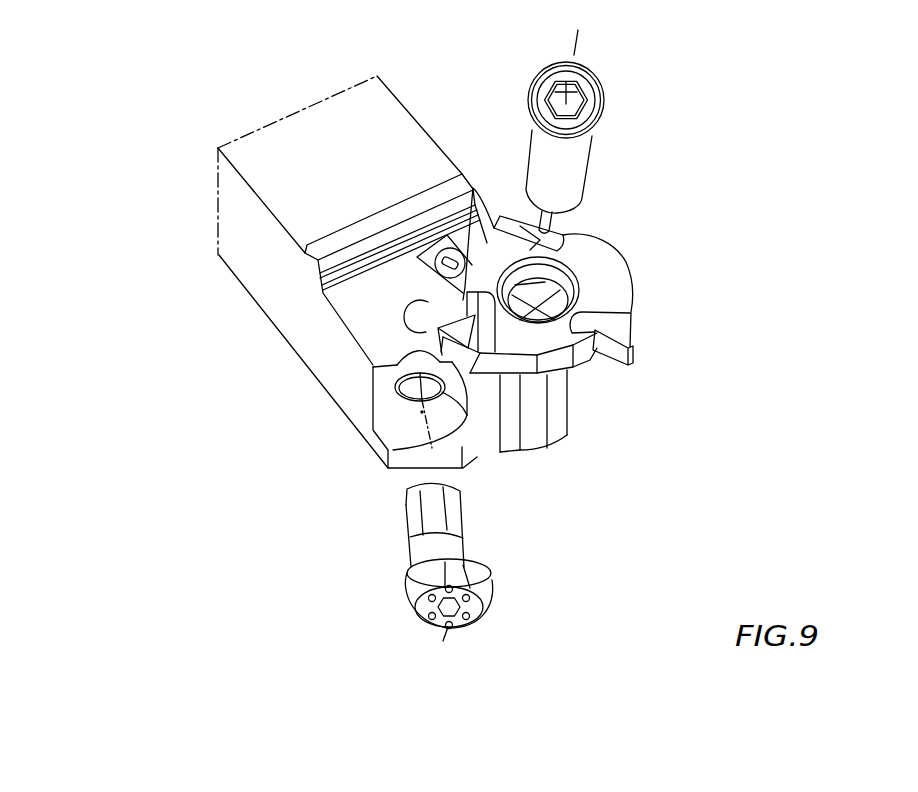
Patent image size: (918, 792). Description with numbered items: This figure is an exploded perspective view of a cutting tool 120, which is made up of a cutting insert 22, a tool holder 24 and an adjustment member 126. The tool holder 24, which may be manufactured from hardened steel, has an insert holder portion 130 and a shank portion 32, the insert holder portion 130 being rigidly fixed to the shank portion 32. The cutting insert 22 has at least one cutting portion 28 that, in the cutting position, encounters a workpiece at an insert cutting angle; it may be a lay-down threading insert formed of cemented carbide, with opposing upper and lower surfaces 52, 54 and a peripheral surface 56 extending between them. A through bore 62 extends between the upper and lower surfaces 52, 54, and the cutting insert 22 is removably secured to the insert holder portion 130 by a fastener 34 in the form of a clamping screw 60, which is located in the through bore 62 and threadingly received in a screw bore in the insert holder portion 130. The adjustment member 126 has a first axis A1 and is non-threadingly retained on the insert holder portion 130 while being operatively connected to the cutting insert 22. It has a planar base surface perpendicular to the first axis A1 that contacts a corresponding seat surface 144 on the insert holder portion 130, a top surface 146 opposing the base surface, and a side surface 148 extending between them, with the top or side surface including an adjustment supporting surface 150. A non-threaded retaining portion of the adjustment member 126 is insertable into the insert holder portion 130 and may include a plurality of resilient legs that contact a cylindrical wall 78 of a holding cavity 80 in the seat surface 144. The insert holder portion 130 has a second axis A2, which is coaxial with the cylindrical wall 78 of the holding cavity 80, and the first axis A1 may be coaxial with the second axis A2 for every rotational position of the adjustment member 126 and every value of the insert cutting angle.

The cutting tool 120 is at (172, 193).
The shank portion 32 is at (252, 253).
The tool holder 24 is at (280, 350).
The insert holder portion 130 is at (350, 378).
The holding cavity 80 is at (408, 388).
The seat surface 144 is at (402, 418).
The second axis A2 is at (436, 434).
The cylindrical wall 78 is at (424, 413).
The cutting insert 22 is at (603, 233).
The upper surface 52 is at (590, 277).
The through bore 62 is at (520, 275).
The peripheral surface 56 is at (550, 367).
The lower surface 54 is at (585, 370).
The cutting portion 28 is at (527, 209).
The clamping screw 60 is at (607, 162).
The fastener 34 is at (607, 133).
The adjustment member 126 is at (487, 545).
The side surface 148 is at (428, 578).
The adjustment supporting surface 150 is at (428, 588).
The top surface 146 is at (477, 607).
The first axis A1 is at (444, 646).